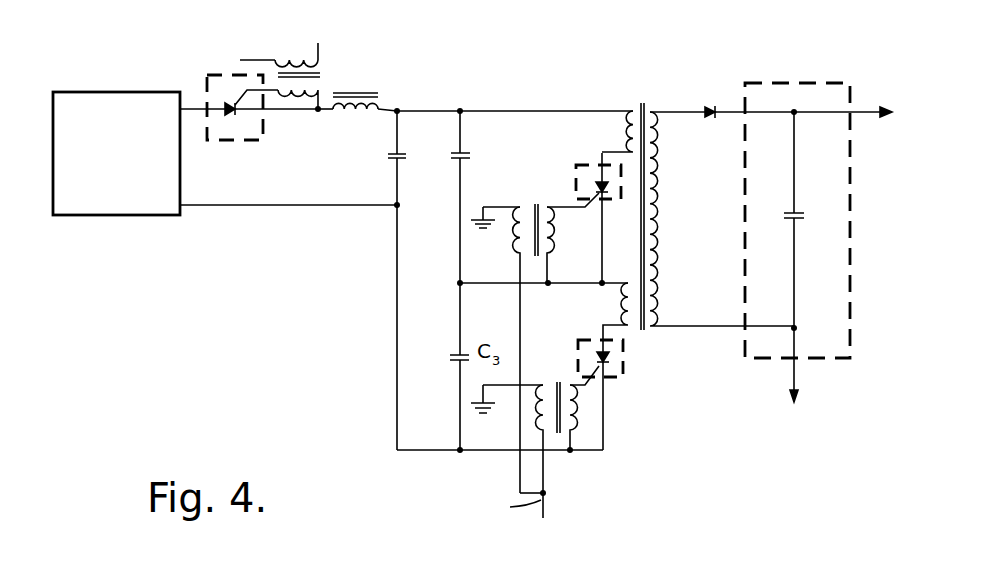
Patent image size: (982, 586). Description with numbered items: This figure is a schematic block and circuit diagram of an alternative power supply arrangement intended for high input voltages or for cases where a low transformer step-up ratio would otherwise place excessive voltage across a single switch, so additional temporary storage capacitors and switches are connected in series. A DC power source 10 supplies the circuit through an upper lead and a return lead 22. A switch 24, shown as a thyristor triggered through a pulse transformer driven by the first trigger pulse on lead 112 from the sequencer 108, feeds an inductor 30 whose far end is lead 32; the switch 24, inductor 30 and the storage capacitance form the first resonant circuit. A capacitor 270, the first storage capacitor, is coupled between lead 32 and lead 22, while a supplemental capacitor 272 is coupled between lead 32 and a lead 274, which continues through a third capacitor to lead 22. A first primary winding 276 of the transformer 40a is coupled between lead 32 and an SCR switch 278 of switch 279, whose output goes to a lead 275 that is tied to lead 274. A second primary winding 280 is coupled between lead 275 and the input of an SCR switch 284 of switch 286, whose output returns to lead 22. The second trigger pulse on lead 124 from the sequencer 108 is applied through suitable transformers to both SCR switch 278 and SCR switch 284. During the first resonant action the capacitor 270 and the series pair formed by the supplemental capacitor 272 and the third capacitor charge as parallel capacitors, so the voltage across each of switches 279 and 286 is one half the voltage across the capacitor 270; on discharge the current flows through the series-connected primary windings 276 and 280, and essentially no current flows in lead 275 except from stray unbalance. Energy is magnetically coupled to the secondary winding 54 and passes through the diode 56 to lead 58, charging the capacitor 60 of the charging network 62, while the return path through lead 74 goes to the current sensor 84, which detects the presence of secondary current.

The DC power source 10 is at (171, 208).
The lead 22 is at (338, 208).
The switch 24 is at (255, 141).
The inductor 30 is at (363, 112).
The lead 32 is at (422, 109).
The transformer 40a is at (641, 107).
The secondary winding 54 is at (656, 220).
The diode 56 is at (710, 118).
The lead 58 is at (867, 116).
The capacitor 60 is at (790, 226).
The charging network 62 is at (843, 83).
The lead 74 is at (797, 378).
The current sensor 84 is at (814, 440).
The sequencer 108 is at (378, 304).
The lead 112 is at (262, 60).
The lead 124 is at (546, 511).
The capacitor 270 is at (388, 162).
The supplemental capacitor 272 is at (468, 154).
The lead 274 is at (458, 243).
The lead 275 is at (495, 284).
The first primary winding 276 is at (628, 138).
The SCR switch 278 is at (597, 187).
The switch 279 is at (576, 167).
The second primary winding 280 is at (627, 301).
The SCR switch 284 is at (620, 368).
The switch 286 is at (625, 343).